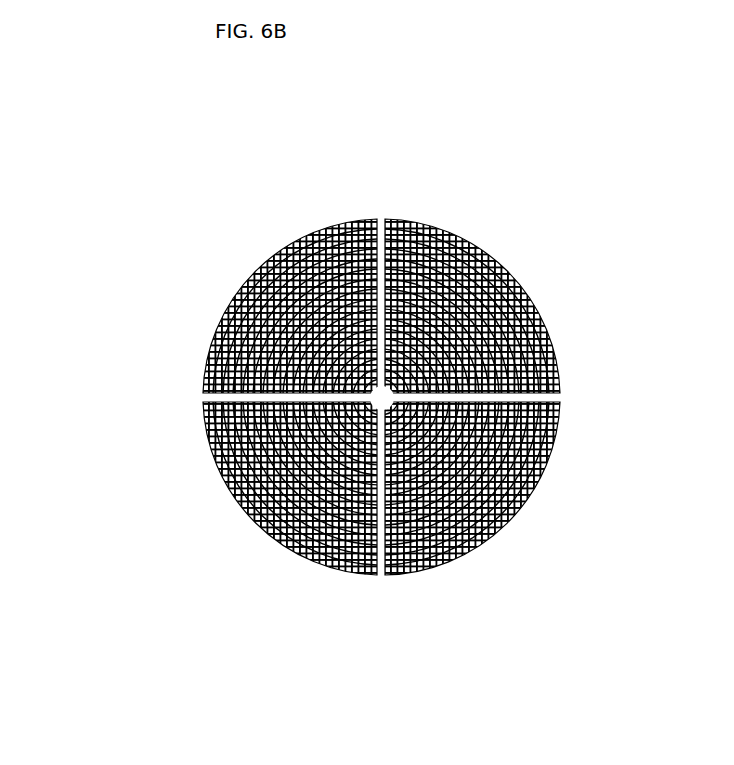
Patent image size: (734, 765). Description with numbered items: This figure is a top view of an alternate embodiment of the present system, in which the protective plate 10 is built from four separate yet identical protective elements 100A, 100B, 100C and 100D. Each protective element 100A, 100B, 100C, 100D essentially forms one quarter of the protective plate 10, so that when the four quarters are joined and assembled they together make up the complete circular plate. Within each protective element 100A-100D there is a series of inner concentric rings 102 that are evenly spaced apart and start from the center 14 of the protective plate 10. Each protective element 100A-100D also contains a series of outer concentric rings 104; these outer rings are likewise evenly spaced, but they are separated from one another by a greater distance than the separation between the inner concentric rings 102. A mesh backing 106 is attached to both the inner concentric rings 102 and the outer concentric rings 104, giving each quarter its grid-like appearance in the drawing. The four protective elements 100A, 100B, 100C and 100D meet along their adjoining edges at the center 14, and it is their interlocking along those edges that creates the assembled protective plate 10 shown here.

The protective plate 10 is at (368, 385).
The center 14 is at (381, 391).
The protective element 100A is at (242, 261).
The protective element 100B is at (538, 274).
The protective element 100C is at (543, 526).
The protective element 100D is at (210, 513).
The inner concentric rings 102 is at (345, 374).
The outer concentric rings 104 is at (435, 538).
The mesh backing 106 is at (232, 444).